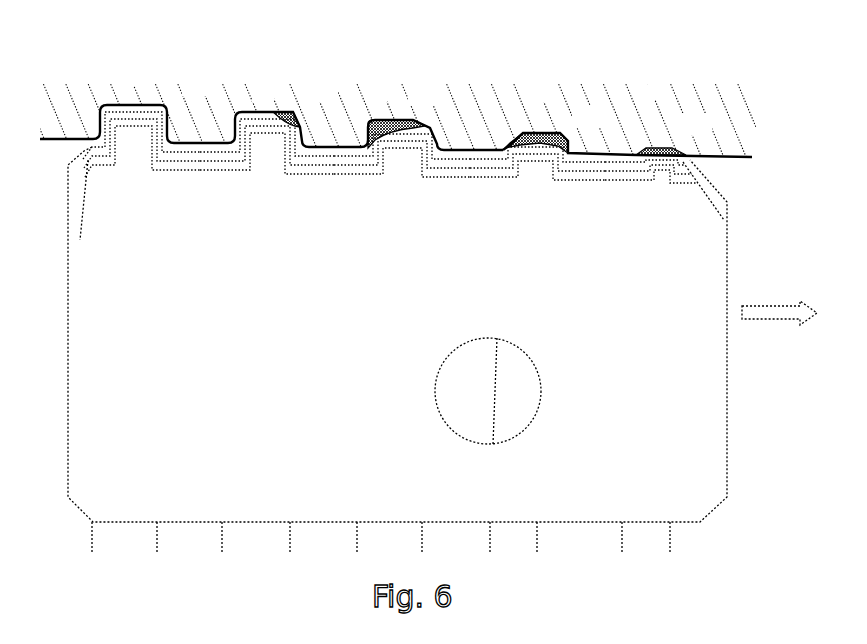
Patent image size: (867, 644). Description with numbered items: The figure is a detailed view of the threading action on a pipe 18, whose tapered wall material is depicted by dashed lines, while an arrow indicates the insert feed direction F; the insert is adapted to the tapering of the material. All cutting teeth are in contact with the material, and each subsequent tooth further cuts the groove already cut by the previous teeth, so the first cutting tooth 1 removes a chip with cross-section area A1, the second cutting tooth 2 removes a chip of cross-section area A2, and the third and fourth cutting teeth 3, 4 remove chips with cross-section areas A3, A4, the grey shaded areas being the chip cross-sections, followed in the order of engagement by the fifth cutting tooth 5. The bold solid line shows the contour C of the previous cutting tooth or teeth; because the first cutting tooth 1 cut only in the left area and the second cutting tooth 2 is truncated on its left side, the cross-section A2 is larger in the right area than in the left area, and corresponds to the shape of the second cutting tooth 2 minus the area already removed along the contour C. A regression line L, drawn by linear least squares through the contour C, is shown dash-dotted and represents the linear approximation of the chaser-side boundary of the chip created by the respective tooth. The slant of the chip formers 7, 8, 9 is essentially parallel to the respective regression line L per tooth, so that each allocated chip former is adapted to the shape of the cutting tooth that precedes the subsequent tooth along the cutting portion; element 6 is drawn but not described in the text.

The first cutting tooth 1 is at (694, 117).
The second cutting tooth 2 is at (569, 116).
The third cutting tooth 3 is at (435, 114).
The fourth cutting tooth 4 is at (301, 113).
The fifth cutting tooth 5 is at (159, 120).
The first layer 6 is at (660, 177).
The chip former 7 is at (527, 160).
The chip former 8 is at (392, 137).
The chip former 9 is at (262, 121).
The pipe 18 is at (212, 93).
The chip cross-section area A1 is at (652, 147).
The chip cross-section area A2 is at (548, 132).
The chip cross-section area A3 is at (392, 113).
The chip cross-section area A4 is at (285, 111).
The regression line L is at (550, 162).
The contour C is at (510, 163).
The insert feed direction F is at (779, 298).